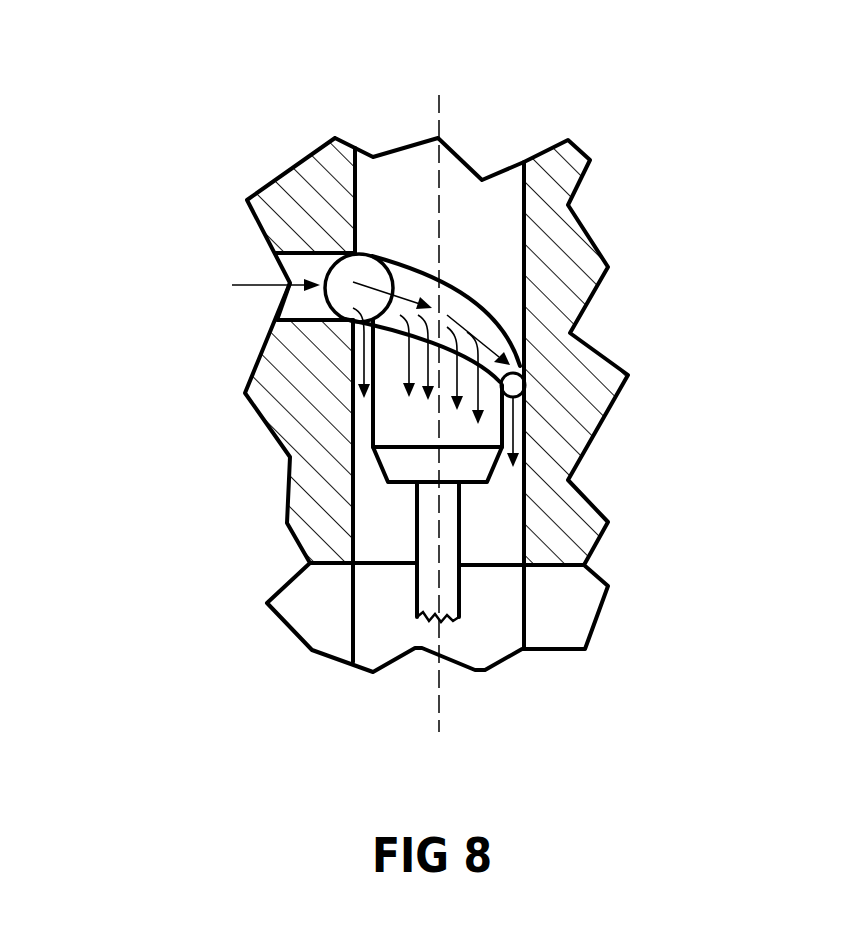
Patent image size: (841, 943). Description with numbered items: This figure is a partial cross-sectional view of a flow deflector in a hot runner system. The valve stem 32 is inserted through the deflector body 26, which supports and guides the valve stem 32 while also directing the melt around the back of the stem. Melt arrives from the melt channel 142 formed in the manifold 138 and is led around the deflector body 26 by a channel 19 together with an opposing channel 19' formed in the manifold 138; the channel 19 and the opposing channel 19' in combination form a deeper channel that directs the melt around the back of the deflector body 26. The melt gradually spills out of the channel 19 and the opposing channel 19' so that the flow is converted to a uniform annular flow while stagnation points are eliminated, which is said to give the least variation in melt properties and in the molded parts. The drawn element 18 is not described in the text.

The ball 18 is at (368, 275).
The deflector body 26 is at (483, 207).
The channel 19 is at (534, 296).
The opposing channel 19' is at (649, 340).
The melt channel 142 is at (307, 310).
The manifold 138 is at (560, 538).
The valve stem 32 is at (452, 602).